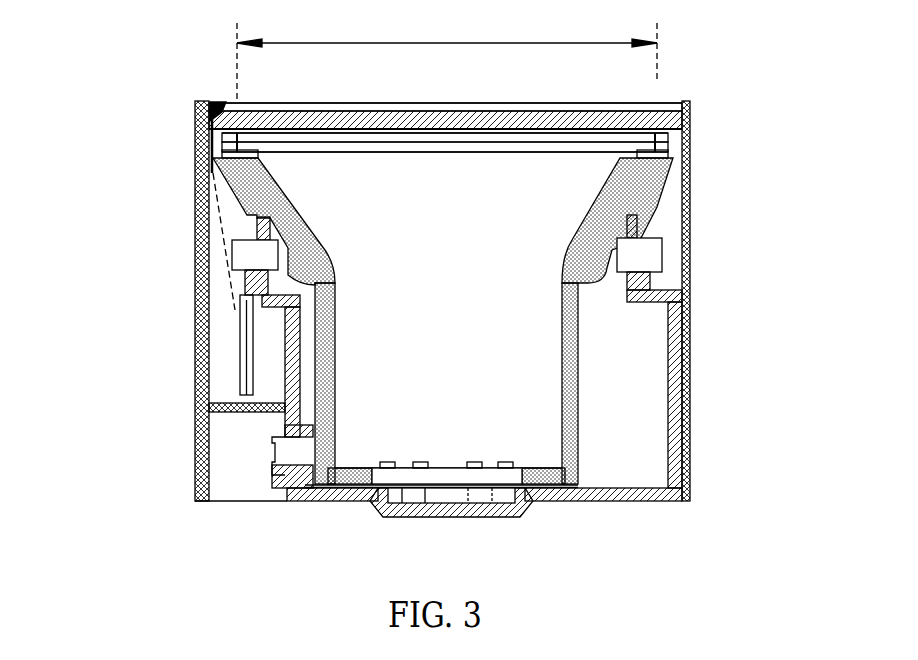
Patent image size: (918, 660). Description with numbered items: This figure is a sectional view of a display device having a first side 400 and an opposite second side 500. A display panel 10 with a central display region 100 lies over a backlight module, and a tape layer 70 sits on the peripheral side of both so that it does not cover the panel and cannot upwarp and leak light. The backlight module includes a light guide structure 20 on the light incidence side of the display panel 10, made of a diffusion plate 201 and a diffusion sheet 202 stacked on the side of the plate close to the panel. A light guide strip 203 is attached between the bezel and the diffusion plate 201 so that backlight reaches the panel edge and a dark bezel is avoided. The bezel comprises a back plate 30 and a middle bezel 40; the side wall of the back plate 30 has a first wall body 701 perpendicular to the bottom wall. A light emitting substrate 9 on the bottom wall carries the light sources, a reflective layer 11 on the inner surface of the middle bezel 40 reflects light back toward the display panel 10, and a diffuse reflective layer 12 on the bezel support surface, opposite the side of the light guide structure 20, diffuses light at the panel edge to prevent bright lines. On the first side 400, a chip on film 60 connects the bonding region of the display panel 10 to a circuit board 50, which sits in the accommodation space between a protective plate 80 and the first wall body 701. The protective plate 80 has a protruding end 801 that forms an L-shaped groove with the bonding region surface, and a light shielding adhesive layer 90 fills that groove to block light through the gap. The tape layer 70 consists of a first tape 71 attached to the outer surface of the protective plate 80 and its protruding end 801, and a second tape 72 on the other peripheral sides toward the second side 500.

The display region 100 is at (447, 60).
The light shielding adhesive layer 90 is at (214, 101).
The tape layer 70 is at (195, 101).
The protruding end 801 is at (208, 113).
The diffuse reflective layer 12 is at (238, 140).
The display panel 10 is at (397, 112).
The first tape 71 is at (195, 188).
The second tape 72 is at (690, 222).
The chip on film 60 is at (233, 249).
The reflective layer 11 is at (340, 290).
The protective plate 80 is at (226, 303).
The middle bezel 40 is at (335, 312).
The circuit board 50 is at (240, 356).
The first wall body 701 is at (300, 352).
The light guide structure 20 is at (420, 153).
The diffusion plate 201 is at (490, 143).
The diffusion sheet 202 is at (520, 134).
The light guide strip 203 is at (258, 156).
The light emitting substrate 9 is at (447, 467).
The back plate 30 is at (425, 514).
The first side 400 is at (108, 218).
The second side 500 is at (770, 228).